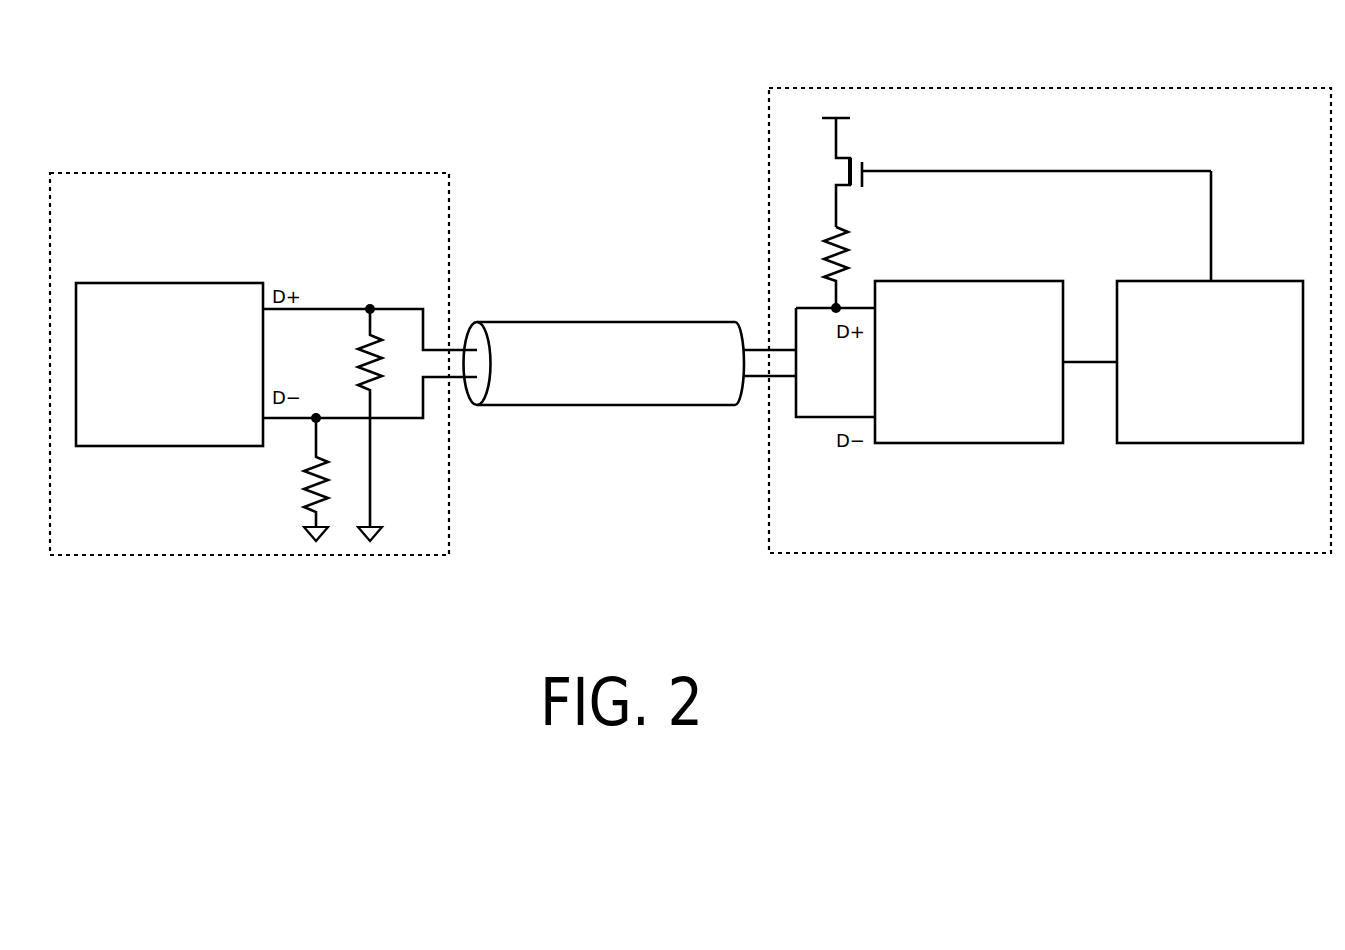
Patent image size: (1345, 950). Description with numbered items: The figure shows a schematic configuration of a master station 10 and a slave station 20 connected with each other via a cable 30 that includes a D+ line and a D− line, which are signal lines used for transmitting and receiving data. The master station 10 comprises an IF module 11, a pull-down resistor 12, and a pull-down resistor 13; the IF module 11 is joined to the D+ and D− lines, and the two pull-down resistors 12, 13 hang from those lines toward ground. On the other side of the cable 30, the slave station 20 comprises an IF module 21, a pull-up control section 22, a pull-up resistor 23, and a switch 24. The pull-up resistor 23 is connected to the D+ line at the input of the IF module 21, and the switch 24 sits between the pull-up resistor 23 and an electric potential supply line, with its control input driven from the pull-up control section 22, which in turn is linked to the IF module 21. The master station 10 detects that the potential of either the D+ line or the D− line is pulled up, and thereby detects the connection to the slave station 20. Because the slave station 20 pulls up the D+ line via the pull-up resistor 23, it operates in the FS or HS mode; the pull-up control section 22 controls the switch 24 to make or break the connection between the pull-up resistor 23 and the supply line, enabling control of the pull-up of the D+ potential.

The master station 10 is at (370, 174).
The IF module 11 is at (212, 283).
The pull-down resistor 12 is at (360, 360).
The pull-down resistor 13 is at (302, 490).
The slave station 20 is at (1250, 88).
The IF module 21 is at (1018, 281).
The pull-up control section 22 is at (1257, 281).
The pull-up resistor 23 is at (842, 250).
The switch 24 is at (855, 163).
The cable 30 is at (659, 322).